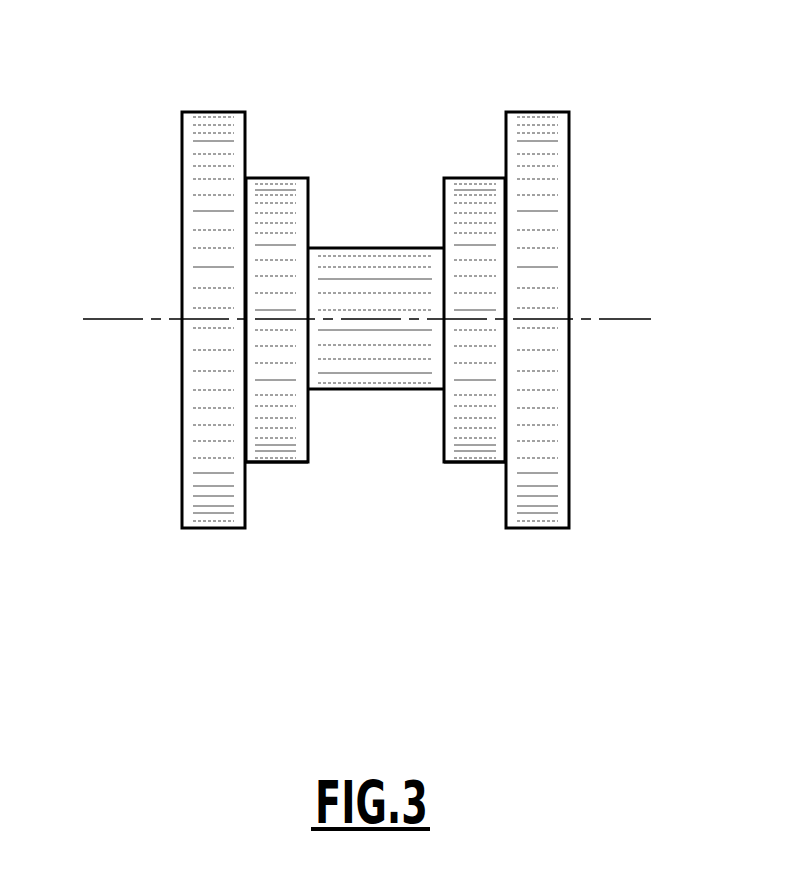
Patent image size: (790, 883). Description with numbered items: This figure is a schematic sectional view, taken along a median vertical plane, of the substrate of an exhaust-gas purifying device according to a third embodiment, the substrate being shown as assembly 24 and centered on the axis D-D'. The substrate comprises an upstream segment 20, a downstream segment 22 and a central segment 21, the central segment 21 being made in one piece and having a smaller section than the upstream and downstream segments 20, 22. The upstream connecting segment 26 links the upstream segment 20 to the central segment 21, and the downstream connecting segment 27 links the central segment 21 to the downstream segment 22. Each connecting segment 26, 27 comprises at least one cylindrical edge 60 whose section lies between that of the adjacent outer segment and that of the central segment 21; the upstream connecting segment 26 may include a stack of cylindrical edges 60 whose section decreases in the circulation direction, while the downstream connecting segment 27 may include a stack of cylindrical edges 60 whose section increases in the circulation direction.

The upstream segment 20 is at (205, 260).
The central segment 21 is at (397, 290).
The downstream segment 22 is at (545, 341).
The rotor assembly 24 is at (386, 86).
The upstream connecting segment 26 is at (282, 191).
The downstream connecting segment 27 is at (467, 184).
The cylindrical edge 60 is at (283, 422).